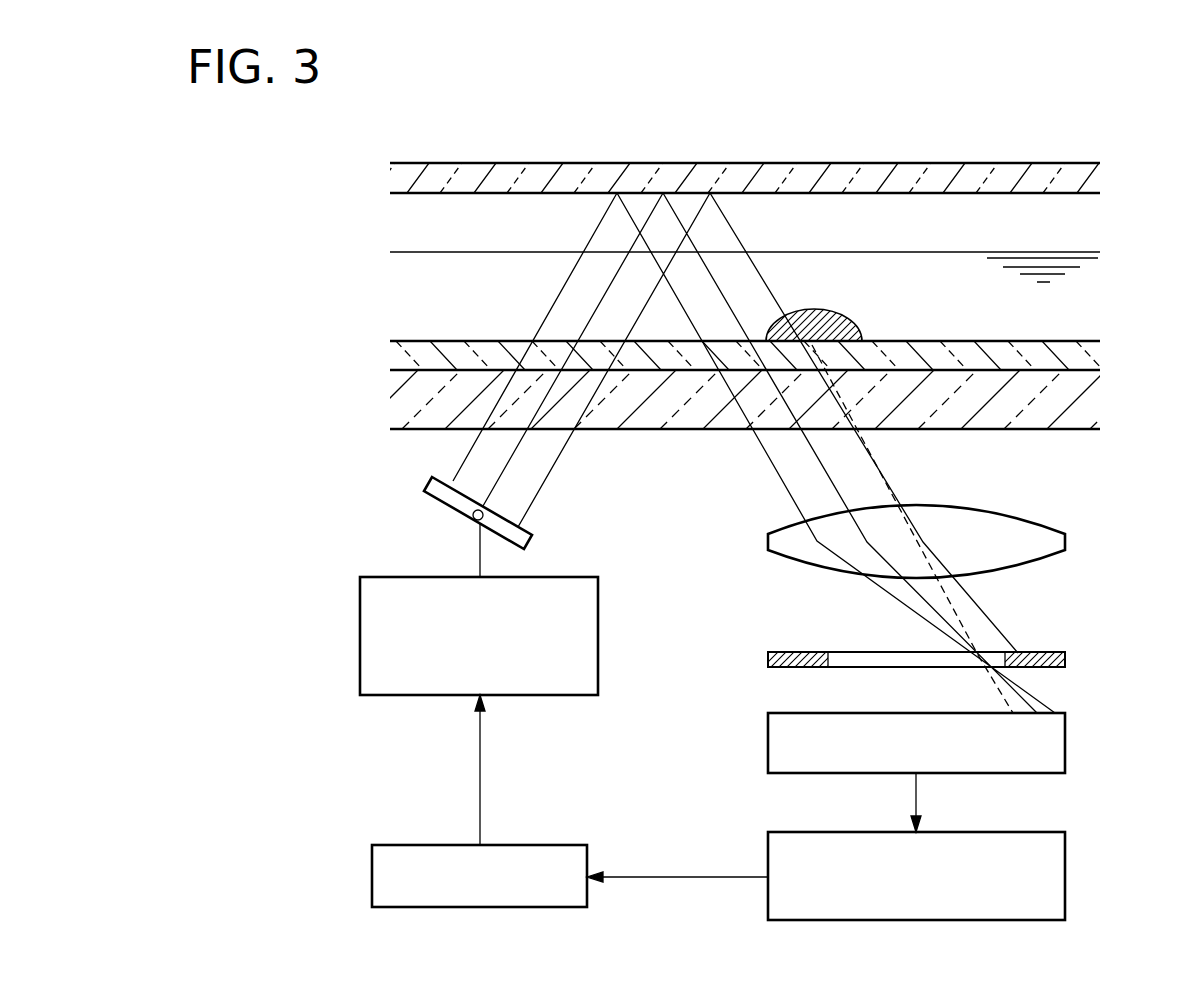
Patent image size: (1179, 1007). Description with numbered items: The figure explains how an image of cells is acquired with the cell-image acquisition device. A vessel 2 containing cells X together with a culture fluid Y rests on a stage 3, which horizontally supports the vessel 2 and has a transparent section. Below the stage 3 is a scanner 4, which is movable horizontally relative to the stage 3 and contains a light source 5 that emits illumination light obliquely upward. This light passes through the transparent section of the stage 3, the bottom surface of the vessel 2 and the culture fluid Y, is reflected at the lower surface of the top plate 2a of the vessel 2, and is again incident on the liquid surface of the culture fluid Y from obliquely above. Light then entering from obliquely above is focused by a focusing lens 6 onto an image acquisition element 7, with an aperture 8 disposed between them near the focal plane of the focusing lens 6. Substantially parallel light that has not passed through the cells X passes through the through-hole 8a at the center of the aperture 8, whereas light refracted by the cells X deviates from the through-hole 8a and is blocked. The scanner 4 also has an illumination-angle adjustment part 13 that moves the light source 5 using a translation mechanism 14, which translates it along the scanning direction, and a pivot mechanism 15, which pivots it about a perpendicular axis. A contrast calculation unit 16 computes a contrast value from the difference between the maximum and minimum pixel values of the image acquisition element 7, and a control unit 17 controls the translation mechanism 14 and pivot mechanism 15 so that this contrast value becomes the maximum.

The vessel 2 is at (513, 150).
The top plate 2a is at (650, 163).
The stage 3 is at (1057, 429).
The scanner 4 is at (233, 462).
The light source 5 is at (360, 635).
The focusing lens 6 is at (1065, 542).
The image acquisition element 7 is at (1065, 735).
The aperture 8 is at (1047, 653).
The through-hole 8a is at (840, 652).
The illumination-angle adjustment part 13 is at (341, 515).
The translation mechanism 14 is at (459, 557).
The pivot mechanism 15 is at (456, 524).
The contrast calculation unit 16 is at (1065, 875).
The control unit 17 is at (372, 873).
The cells X is at (842, 315).
The culture fluid Y is at (949, 252).